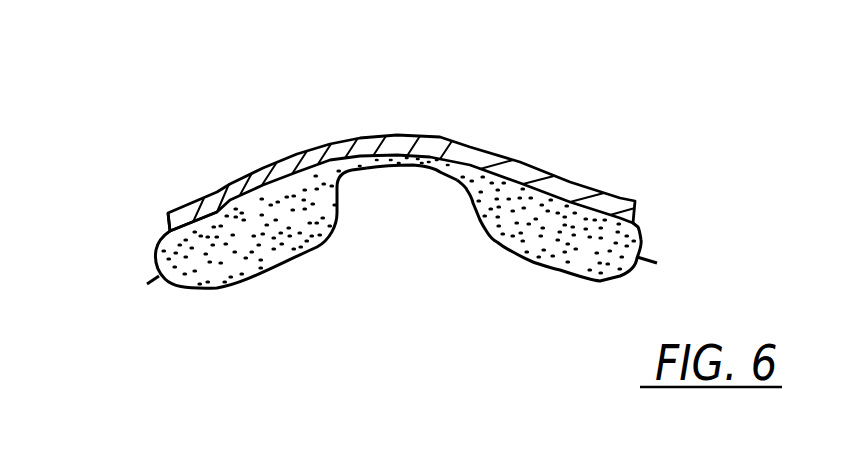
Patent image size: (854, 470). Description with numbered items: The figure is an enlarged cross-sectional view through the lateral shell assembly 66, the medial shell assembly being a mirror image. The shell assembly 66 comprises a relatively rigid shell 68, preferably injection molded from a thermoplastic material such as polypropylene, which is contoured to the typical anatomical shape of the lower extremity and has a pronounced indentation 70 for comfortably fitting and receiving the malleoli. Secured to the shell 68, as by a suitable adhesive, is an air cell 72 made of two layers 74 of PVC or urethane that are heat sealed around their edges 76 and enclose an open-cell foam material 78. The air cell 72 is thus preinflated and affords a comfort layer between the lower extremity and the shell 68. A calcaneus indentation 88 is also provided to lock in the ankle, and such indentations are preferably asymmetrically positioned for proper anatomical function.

The shell assembly 66 is at (553, 123).
The pronounced indentation 70 is at (425, 133).
The shell 68 is at (212, 193).
The air cell 72 is at (212, 290).
The calcaneus indentation 88 is at (413, 167).
The layer 74 is at (643, 223).
The edge 76 is at (653, 260).
The open-cell foam material 78 is at (196, 263).